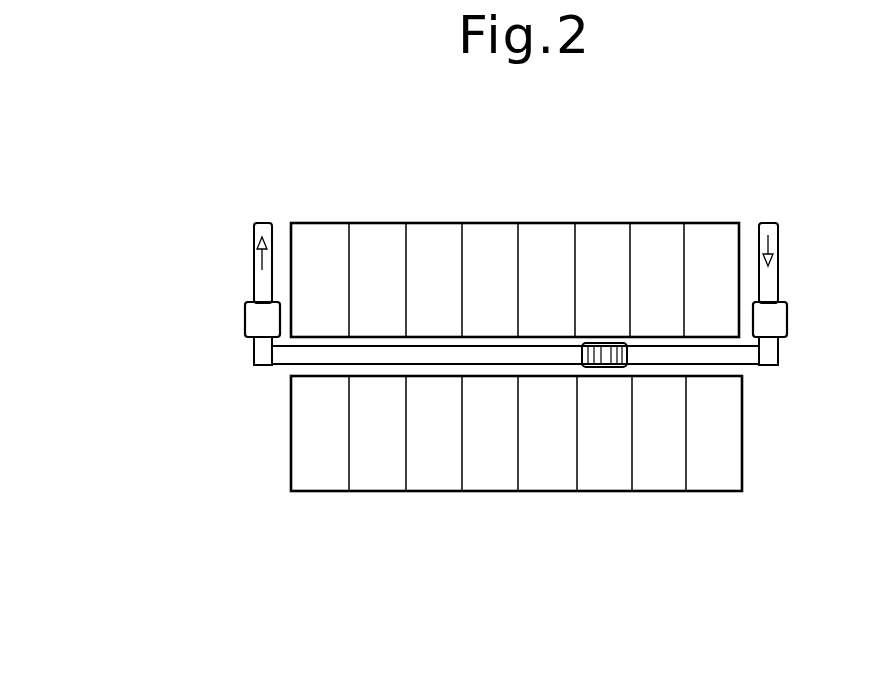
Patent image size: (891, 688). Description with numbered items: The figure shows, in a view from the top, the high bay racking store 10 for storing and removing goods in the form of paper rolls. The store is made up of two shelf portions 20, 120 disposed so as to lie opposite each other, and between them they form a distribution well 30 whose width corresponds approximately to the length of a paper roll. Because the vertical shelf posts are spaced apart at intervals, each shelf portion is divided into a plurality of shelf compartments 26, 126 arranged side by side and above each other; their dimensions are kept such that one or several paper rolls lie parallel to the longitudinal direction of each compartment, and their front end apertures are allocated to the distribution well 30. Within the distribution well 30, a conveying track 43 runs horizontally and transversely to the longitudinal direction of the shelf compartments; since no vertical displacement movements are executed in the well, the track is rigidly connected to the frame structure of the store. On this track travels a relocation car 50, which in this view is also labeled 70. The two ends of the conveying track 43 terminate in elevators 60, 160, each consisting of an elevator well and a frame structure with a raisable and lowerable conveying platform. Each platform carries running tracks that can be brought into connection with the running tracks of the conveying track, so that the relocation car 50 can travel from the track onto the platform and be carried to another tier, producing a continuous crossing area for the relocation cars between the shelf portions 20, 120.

The high bay racking store 10 is at (265, 392).
The shelf portion 20 is at (371, 223).
The shelf compartment 26 is at (444, 300).
The distribution well 30 is at (737, 370).
The conveying track 43 is at (750, 353).
The relocation car 50 is at (616, 262).
The slider element 70 is at (607, 343).
The elevator 60 is at (777, 320).
The elevator 160 is at (250, 322).
The shelf portion 120 is at (290, 455).
The shelf compartment 126 is at (454, 456).